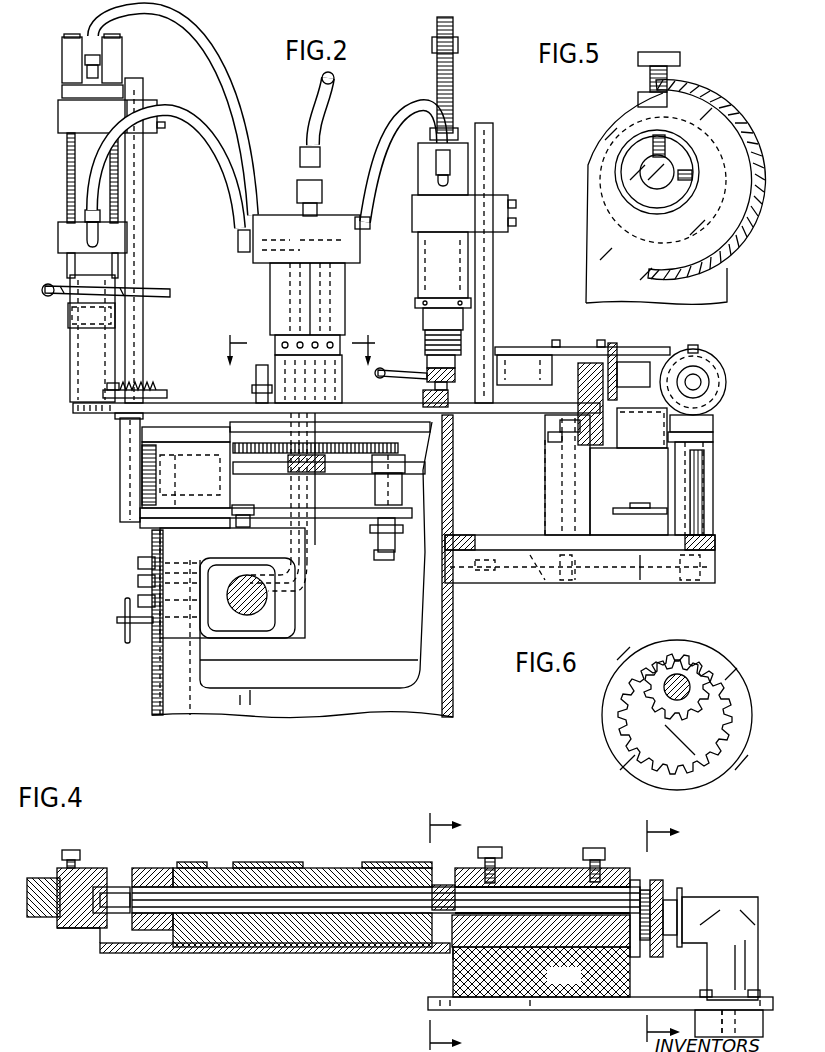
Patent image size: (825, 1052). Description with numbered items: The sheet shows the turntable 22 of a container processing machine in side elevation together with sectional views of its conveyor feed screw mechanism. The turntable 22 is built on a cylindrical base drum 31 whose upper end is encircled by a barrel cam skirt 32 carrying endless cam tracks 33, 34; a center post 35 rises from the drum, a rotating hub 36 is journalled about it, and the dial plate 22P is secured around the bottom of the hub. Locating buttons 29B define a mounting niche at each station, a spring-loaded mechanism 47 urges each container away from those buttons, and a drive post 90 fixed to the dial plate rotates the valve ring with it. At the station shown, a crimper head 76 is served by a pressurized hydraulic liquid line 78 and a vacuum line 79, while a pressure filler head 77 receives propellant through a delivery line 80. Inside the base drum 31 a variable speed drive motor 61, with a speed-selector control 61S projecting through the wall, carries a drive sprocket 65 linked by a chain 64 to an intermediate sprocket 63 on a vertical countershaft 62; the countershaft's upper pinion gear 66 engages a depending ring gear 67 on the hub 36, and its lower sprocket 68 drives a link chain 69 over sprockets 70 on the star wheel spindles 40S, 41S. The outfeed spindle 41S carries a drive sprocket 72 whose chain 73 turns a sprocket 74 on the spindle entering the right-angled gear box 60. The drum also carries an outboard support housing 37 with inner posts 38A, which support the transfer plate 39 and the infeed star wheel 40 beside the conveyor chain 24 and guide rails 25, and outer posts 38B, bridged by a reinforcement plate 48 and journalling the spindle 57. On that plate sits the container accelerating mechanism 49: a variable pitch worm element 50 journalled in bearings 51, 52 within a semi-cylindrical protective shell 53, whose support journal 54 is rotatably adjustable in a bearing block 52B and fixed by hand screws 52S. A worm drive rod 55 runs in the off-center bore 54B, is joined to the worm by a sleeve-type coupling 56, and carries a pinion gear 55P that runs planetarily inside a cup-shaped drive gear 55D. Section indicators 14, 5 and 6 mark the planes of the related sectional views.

In FIG. 2, the crimper head 76 is at (66, 175).
In FIG. 2, the pressurized hydraulic liquid line 78 is at (226, 60).
In FIG. 2, the vacuum line 79 is at (186, 128).
In FIG. 2, the pressurized propellant delivery line 80 is at (390, 125).
In FIG. 2, the center post 35 is at (308, 313).
In FIG. 2, the rotating hub 36 is at (335, 385).
In FIG. 2, the section line 14 is at (299, 348).
In FIG. 2, the drive post 90 is at (258, 384).
In FIG. 2, the pressure filler head 77 is at (472, 255).
In FIG. 2, the infeed star wheel 40 is at (513, 365).
In FIG. 2, the guide rails 25 is at (615, 345).
In FIG. 2, the right-angled gear box 60 is at (707, 422).
In FIG. 4, the right-angled gear box 60 is at (740, 924).
In FIG. 2, the reinforcement plate 48 is at (713, 438).
In FIG. 4, the reinforcement plate 48 is at (515, 1010).
In FIG. 2, the outer pair of tubular posts 38B is at (703, 485).
In FIG. 4, the outer pair of tubular posts 38B is at (750, 1010).
In FIG. 2, the spindle 57 is at (697, 515).
In FIG. 4, the spindle 57 is at (723, 1020).
In FIG. 2, the inner pair of tubular posts 38A is at (548, 480).
In FIG. 2, the spindle 40S is at (548, 505).
In FIG. 2, the transfer plate 39 is at (548, 418).
In FIG. 2, the link chain 24 is at (633, 505).
In FIG. 2, the outboard support housing 37 is at (580, 559).
In FIG. 2, the sprocket 74 is at (713, 565).
In FIG. 2, the link chain 69 is at (508, 560).
In FIG. 2, the sprockets 70 is at (535, 575).
In FIG. 2, the spindle 41S is at (552, 600).
In FIG. 2, the drive sprocket 72 is at (575, 580).
In FIG. 2, the link chain 73 is at (640, 580).
In FIG. 2, the dial plate 22P is at (175, 408).
In FIG. 2, the locating buttons 29B is at (100, 393).
In FIG. 2, the spring-loaded mechanism 47 is at (154, 385).
In FIG. 2, the turntable 22 is at (116, 440).
In FIG. 2, the cam track 33 is at (197, 445).
In FIG. 2, the barrel cam skirt 32 is at (194, 500).
In FIG. 2, the ring gear 67 is at (240, 445).
In FIG. 2, the pinion gear 66 is at (385, 442).
In FIG. 2, the cam track 34 is at (160, 528).
In FIG. 2, the link chain 64 is at (345, 512).
In FIG. 2, the drive sprocket 65 is at (245, 505).
In FIG. 2, the intermediate sprocket 63 is at (375, 508).
In FIG. 2, the vertical countershaft 62 is at (385, 528).
In FIG. 2, the sprocket 68 is at (375, 560).
In FIG. 2, the base drum 31 is at (433, 669).
In FIG. 2, the variable speed drive motor 61 is at (295, 625).
In FIG. 2, the speed-selector control 61S is at (123, 630).
In FIG. 5, the hand screws 52S is at (682, 58).
In FIG. 4, the hand screws 52S is at (488, 847).
In FIG. 5, the protective shell 53 is at (740, 117).
In FIG. 4, the protective shell 53 is at (233, 953).
In FIG. 5, the bearing block 52B is at (600, 137).
In FIG. 4, the bearing block 52B is at (580, 984).
In FIG. 5, the support journal 54 is at (620, 213).
In FIG. 4, the support journal 54 is at (532, 927).
In FIG. 5, the off-center bore 54B is at (617, 163).
In FIG. 4, the off-center bore 54B is at (505, 897).
In FIG. 6, the cup-shaped drive gear 55D is at (737, 697).
In FIG. 4, the cup-shaped drive gear 55D is at (663, 887).
In FIG. 6, the worm drive rod 55 is at (665, 675).
In FIG. 4, the worm drive rod 55 is at (600, 907).
In FIG. 6, the pinion gear 55P is at (683, 663).
In FIG. 4, the pinion gear 55P is at (650, 880).
In FIG. 4, the bearing 51 is at (70, 935).
In FIG. 4, the container feed worm element 50 is at (302, 862).
In FIG. 4, the sleeve-type coupling 56 is at (446, 884).
In FIG. 4, the bearing 52 is at (563, 860).
In FIG. 4, the container accelerating mechanism 49 is at (445, 965).
In FIG. 4, the section line 5 is at (435, 932).
In FIG. 4, the section line 6 is at (650, 932).